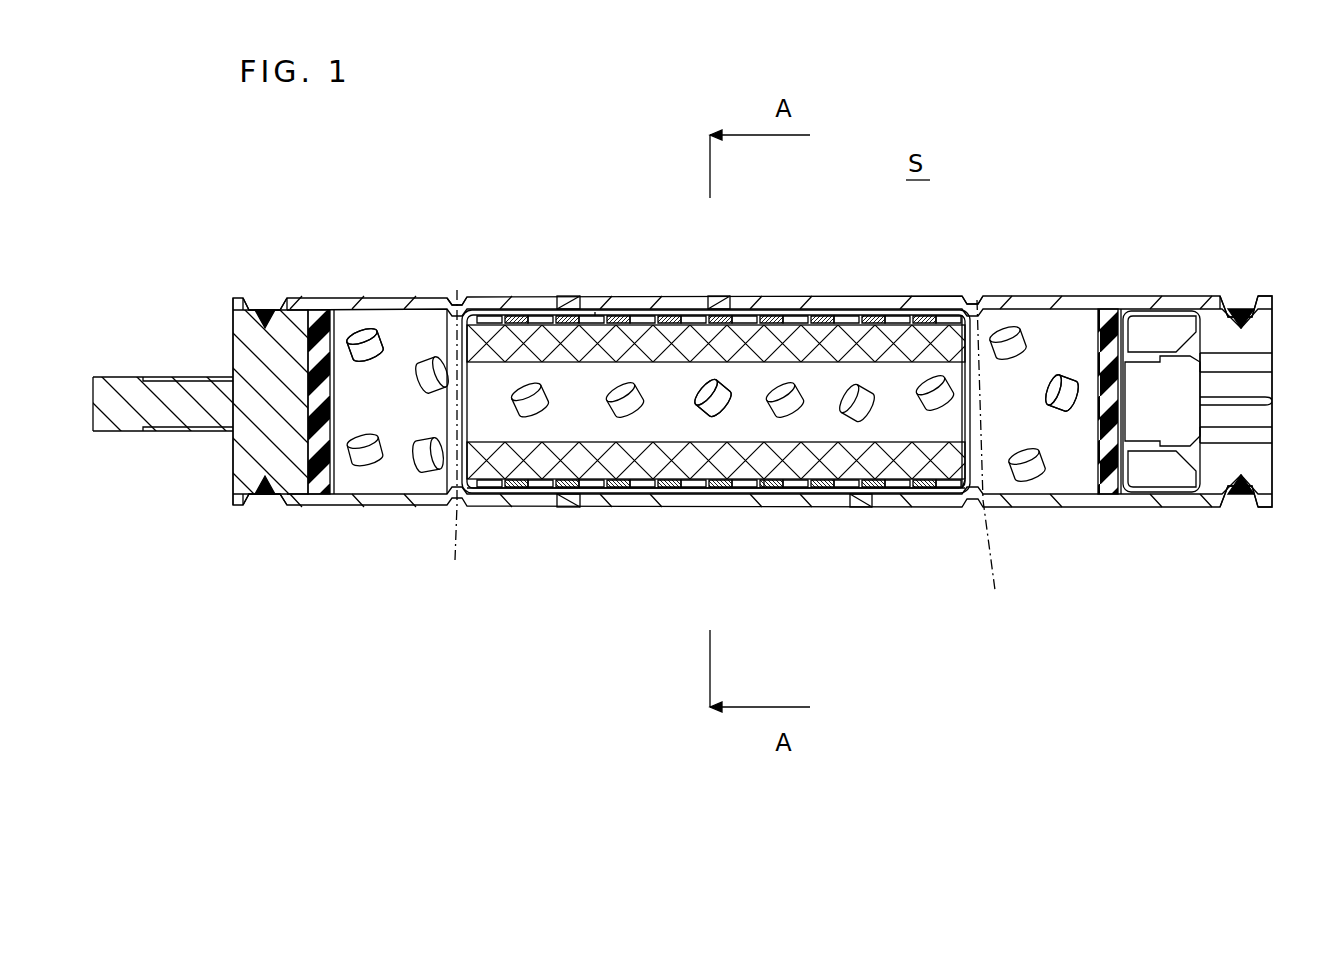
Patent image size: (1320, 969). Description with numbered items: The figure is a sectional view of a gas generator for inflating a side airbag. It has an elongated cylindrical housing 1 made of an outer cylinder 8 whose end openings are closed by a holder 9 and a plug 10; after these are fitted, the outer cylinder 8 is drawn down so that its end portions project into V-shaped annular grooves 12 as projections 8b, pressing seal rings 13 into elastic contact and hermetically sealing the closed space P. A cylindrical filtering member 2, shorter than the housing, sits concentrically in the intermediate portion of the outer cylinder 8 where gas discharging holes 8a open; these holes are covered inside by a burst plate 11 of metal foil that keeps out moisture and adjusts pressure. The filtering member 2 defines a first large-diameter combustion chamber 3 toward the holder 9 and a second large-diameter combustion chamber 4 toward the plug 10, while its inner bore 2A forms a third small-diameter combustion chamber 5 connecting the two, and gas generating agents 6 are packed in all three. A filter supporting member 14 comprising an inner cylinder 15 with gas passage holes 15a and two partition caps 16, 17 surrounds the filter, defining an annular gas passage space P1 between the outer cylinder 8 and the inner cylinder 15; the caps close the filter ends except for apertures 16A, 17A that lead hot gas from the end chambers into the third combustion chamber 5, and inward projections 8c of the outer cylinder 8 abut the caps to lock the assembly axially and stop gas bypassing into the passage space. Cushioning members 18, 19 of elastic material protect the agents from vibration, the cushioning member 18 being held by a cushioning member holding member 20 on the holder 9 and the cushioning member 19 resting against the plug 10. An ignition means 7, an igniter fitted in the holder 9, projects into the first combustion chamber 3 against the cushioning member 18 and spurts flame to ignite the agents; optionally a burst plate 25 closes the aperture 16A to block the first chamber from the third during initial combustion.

The housing 1 is at (347, 296).
The filtering member 2 is at (880, 312).
The inner bore 2A is at (872, 492).
The first combustion chamber 3 is at (1060, 478).
The second combustion chamber 4 is at (392, 480).
The third combustion chamber 5 is at (705, 430).
The gas generating agents 6 is at (364, 352).
The ignition means 7 is at (1153, 413).
The outer cylinder 8 is at (383, 297).
The gas discharging holes 8a is at (563, 296).
The projections 8b is at (288, 505).
The projections 8c is at (457, 298).
The holder 9 is at (1245, 318).
The plug 10 is at (250, 455).
The burst plate 11 is at (800, 310).
The V-shaped annular grooves 12 is at (255, 507).
The seal rings 13 is at (266, 493).
The filter supporting member 14 is at (873, 340).
The inner cylinder 15 is at (660, 314).
The gas passage holes 15a is at (733, 310).
The partition cap 16 is at (957, 310).
The aperture 16A is at (957, 490).
The partition cap 17 is at (497, 312).
The aperture 17A is at (496, 488).
The cushioning member 18 is at (1106, 309).
The cushioning member 19 is at (318, 312).
The cushioning member holding member 20 is at (1150, 311).
The burst plate 25 is at (730, 455).
The closed space P is at (764, 480).
The gas passage space P1 is at (595, 312).